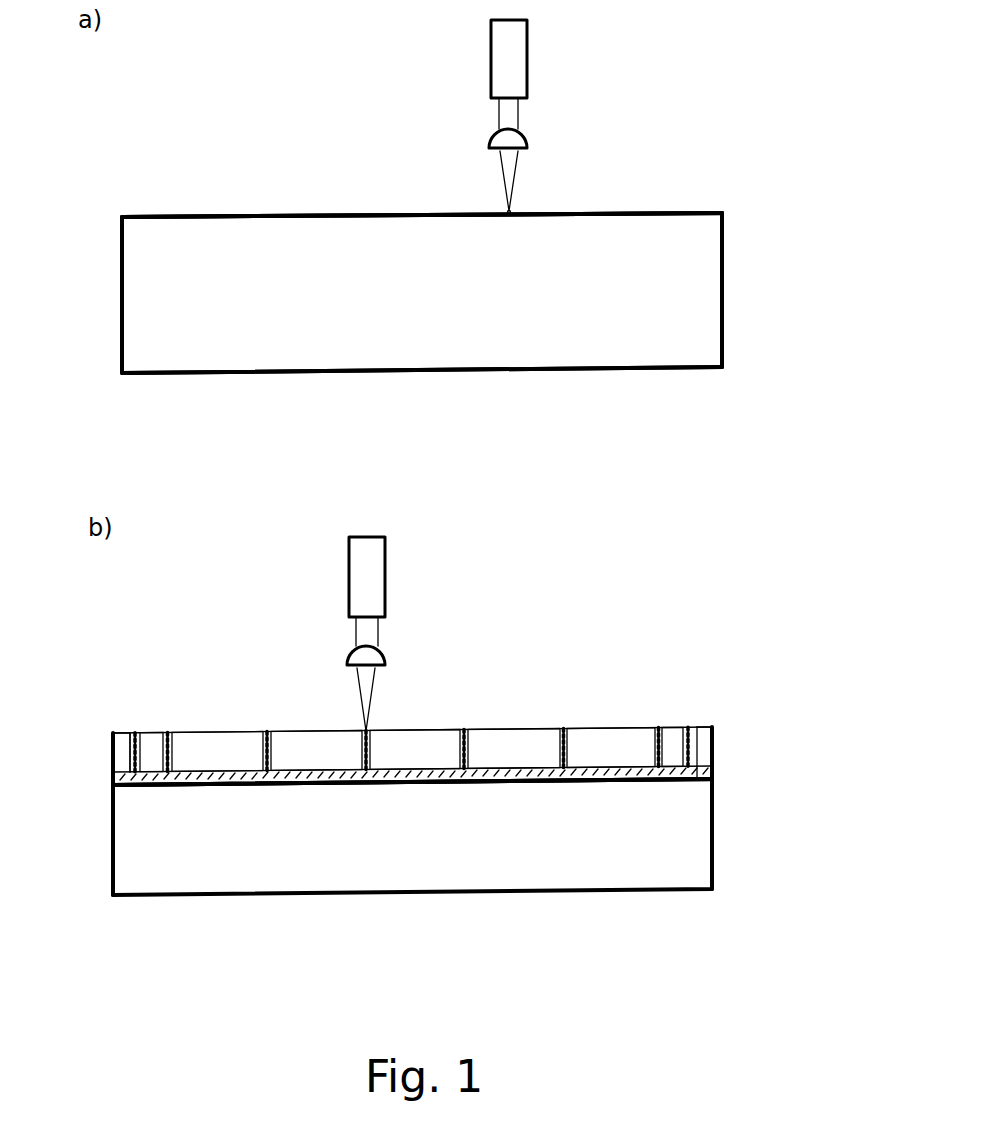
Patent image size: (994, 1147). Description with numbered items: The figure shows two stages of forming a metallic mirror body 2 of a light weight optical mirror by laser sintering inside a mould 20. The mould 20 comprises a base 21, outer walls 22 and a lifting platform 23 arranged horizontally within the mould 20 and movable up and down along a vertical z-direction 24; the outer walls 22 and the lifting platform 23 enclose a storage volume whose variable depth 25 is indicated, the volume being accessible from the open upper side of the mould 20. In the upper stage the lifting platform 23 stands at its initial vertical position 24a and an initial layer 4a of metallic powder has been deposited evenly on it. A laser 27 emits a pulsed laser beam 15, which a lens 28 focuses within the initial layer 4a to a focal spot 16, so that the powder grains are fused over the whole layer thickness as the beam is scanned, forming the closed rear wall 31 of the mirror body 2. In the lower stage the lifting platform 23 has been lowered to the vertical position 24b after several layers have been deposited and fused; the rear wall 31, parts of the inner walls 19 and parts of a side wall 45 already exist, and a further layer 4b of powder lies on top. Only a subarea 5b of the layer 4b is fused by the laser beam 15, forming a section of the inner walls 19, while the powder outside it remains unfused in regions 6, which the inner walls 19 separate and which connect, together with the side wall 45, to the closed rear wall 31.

The mirror body 2 is at (545, 782).
The initial layer 4a is at (588, 212).
The layer 4b is at (487, 728).
The subarea 5b is at (134, 732).
The unsintered regions 6 is at (158, 764).
The laser beam 15 is at (503, 186).
The focal spot 16 is at (512, 210).
The inner walls 19 is at (172, 745).
The mould 20 is at (626, 407).
The base 21 is at (446, 375).
The outer walls 22 is at (120, 307).
The lifting platform 23 is at (380, 218).
The vertical z-direction 24 is at (238, 100).
The initial vertical position 24a is at (735, 213).
The vertical position 24b is at (727, 777).
The variable depth 25 is at (116, 228).
The laser 27 is at (528, 79).
The lens 28 is at (528, 141).
The closed rear wall 31 is at (388, 781).
The side wall 45 is at (102, 736).